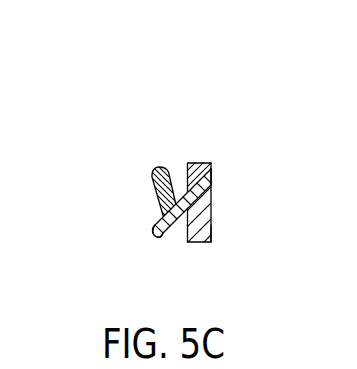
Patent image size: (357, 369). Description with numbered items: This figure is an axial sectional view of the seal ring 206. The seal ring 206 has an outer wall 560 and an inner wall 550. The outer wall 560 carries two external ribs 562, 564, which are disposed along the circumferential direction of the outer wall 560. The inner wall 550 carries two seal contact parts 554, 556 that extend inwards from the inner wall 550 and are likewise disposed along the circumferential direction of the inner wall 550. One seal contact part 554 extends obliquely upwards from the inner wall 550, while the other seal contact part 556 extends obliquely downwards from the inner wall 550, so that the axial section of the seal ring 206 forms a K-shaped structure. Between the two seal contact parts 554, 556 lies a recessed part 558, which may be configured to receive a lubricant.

The seal ring 206 is at (92, 85).
The inner wall 550 is at (188, 164).
The seal contact part 554 is at (153, 174).
The seal contact part 556 is at (153, 233).
The recessed part 558 is at (158, 209).
The outer wall 560 is at (211, 195).
The external rib 562 is at (211, 170).
The external rib 564 is at (211, 228).